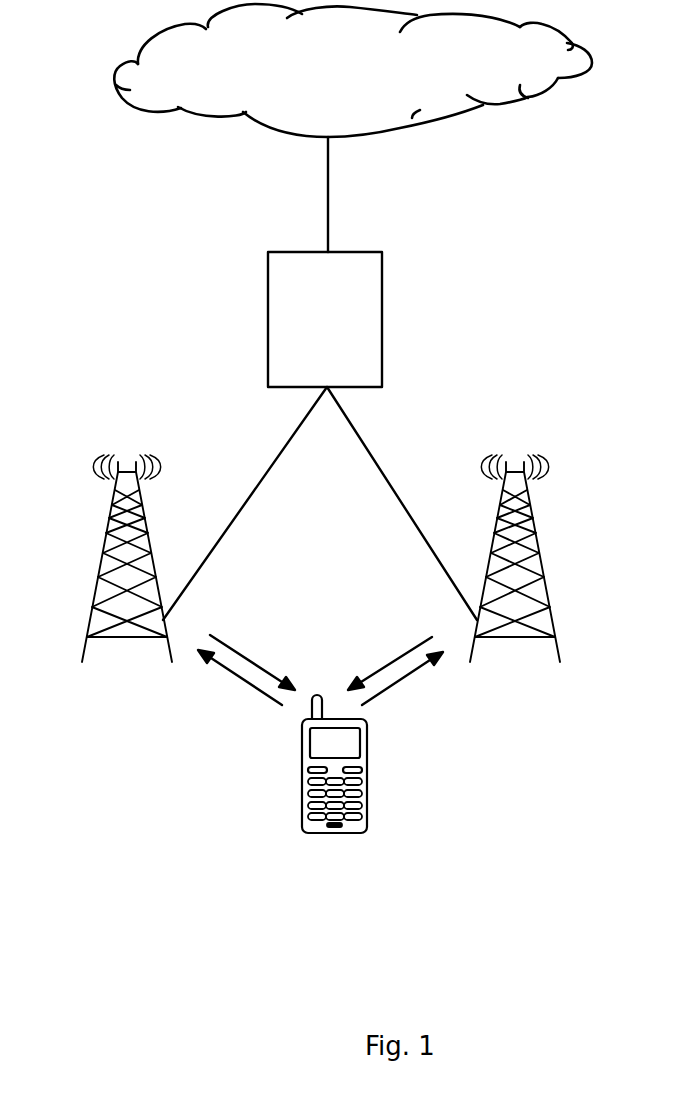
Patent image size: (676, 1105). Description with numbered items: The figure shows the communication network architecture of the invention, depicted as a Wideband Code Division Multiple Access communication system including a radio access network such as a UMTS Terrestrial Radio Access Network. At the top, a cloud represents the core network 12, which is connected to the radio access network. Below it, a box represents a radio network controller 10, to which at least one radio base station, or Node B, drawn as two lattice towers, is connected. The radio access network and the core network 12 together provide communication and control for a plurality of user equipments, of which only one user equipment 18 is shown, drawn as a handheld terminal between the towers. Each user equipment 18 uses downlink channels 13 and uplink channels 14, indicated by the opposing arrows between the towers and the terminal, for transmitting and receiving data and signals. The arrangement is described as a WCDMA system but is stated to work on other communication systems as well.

The Radio Network Controller 10 is at (368, 316).
The core network 12 is at (550, 95).
The downlink channels 13 is at (242, 652).
The uplink channels 14 is at (248, 687).
The user equipment 18 is at (363, 763).